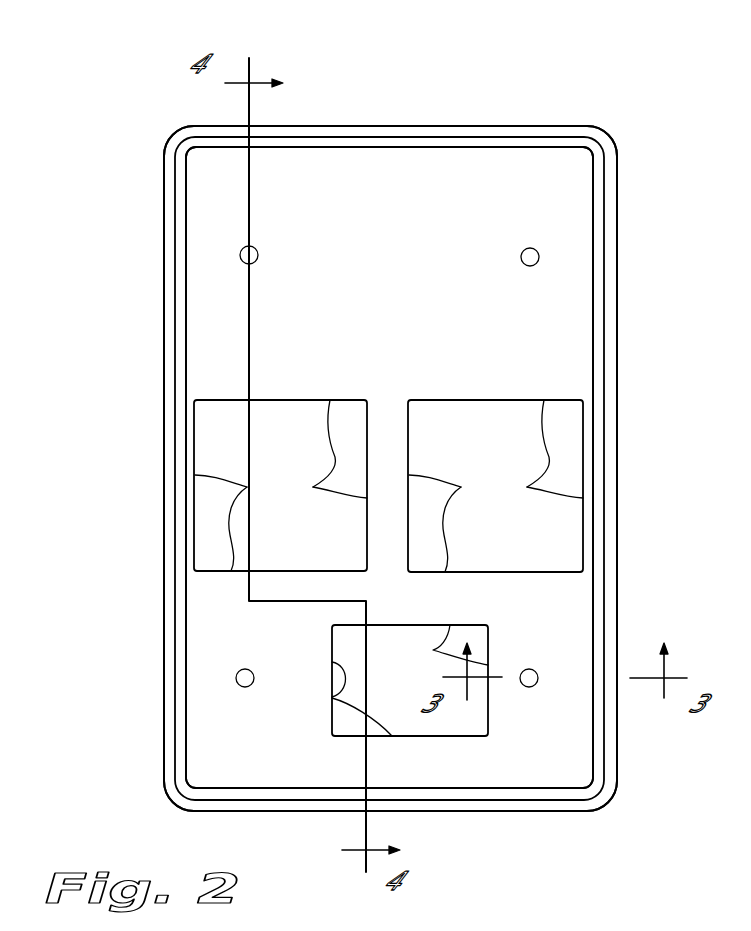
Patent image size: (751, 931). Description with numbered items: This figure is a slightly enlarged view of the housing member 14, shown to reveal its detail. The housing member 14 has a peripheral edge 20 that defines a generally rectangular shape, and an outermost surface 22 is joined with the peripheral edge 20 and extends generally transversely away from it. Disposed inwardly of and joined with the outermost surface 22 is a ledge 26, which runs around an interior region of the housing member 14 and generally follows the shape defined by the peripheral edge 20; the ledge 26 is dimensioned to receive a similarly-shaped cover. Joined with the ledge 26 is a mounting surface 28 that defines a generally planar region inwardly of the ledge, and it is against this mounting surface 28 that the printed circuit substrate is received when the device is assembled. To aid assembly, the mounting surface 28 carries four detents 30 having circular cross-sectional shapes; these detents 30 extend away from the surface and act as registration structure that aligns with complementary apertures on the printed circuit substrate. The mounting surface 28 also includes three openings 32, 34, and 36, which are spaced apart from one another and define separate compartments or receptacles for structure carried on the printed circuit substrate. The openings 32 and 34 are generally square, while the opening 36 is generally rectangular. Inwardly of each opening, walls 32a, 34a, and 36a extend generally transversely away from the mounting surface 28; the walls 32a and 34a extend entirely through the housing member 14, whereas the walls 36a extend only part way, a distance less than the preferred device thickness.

The housing member 14 is at (195, 121).
The peripheral edge 20 is at (372, 126).
The outermost surface 22 is at (443, 137).
The ledge 26 is at (518, 147).
The mounting surface 28 is at (398, 293).
The detents 30 is at (256, 247).
The opening 32 is at (301, 375).
The walls 32a is at (306, 503).
The opening 34 is at (476, 376).
The walls 34a is at (519, 503).
The opening 36 is at (303, 652).
The walls 36a is at (332, 695).